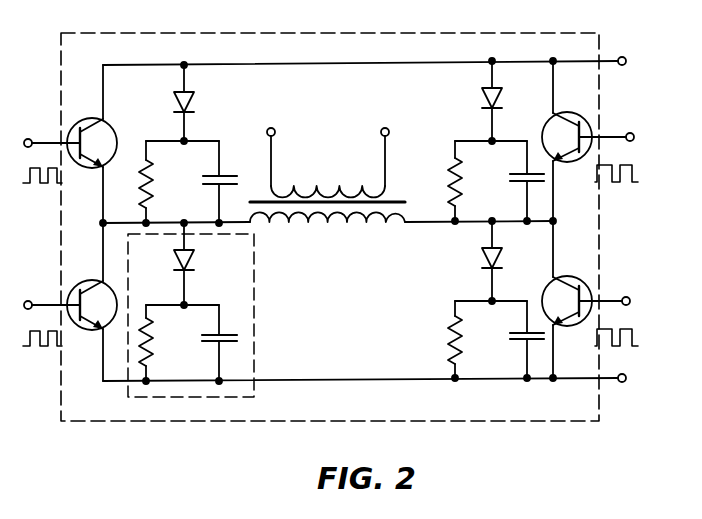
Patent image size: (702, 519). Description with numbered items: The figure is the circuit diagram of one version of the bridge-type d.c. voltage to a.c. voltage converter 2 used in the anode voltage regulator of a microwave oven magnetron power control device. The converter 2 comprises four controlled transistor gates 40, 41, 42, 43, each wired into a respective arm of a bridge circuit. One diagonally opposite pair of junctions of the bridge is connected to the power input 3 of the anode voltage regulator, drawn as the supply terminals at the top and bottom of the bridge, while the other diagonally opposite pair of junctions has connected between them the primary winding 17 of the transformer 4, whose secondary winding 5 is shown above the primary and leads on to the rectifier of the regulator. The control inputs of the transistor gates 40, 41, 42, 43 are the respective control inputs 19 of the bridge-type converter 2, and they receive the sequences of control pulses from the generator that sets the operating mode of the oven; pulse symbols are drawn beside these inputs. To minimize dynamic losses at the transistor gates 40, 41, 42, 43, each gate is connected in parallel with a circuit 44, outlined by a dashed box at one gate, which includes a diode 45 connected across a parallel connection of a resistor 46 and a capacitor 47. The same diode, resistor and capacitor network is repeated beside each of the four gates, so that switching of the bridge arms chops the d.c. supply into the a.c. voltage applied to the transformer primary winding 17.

The bridge-type d.c. voltage to a.c. voltage converter 2 is at (528, 33).
The power input 3 is at (631, 224).
The transformer 4 is at (335, 197).
The secondary winding 5 is at (373, 190).
The primary winding 17 is at (337, 226).
The control inputs 19 is at (343, 209).
The controlled transistor gate 40 is at (99, 281).
The controlled transistor gate 41 is at (99, 119).
The controlled transistor gate 42 is at (590, 115).
The controlled transistor gate 43 is at (588, 280).
The circuit 44 is at (254, 377).
The diode 45 is at (195, 262).
The resistor 46 is at (152, 346).
The capacitor 47 is at (224, 336).